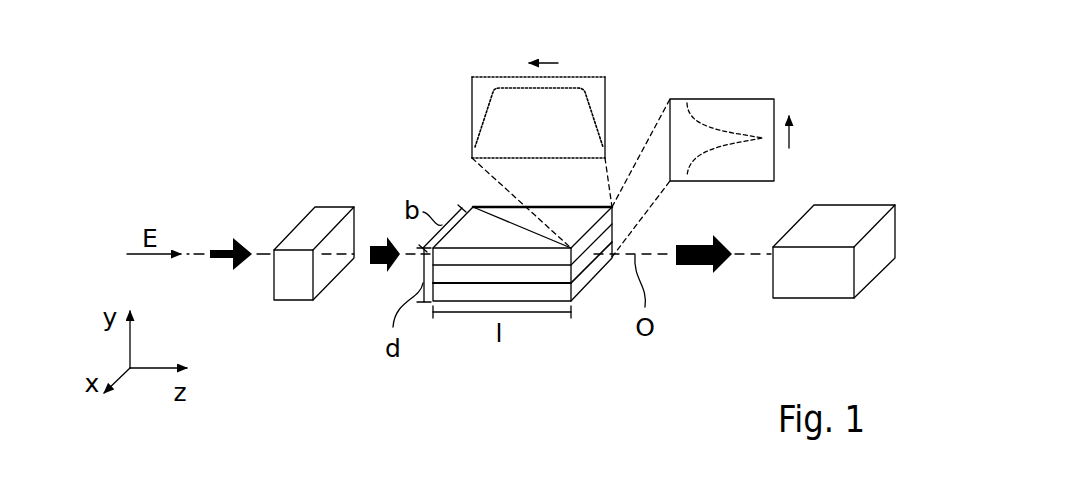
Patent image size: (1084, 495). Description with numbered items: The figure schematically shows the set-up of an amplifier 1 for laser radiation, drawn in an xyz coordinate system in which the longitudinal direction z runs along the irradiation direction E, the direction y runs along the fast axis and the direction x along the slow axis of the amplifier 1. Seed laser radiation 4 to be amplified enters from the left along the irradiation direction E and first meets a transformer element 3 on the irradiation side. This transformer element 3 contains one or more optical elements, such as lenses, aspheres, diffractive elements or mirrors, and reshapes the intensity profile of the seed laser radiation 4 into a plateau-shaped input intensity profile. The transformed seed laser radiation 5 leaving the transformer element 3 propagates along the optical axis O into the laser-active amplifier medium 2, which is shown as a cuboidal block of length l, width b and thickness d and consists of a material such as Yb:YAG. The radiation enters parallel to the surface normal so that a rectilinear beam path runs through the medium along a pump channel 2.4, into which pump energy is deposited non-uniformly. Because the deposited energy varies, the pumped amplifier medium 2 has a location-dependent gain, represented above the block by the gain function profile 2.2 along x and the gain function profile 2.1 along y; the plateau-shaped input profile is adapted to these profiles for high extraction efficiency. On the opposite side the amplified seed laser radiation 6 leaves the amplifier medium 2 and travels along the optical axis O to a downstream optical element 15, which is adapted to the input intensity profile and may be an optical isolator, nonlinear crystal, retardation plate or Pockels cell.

The amplifier 1 is at (240, 97).
The laser-active amplifier medium 2 is at (488, 232).
The gain function profile 2.1 is at (715, 127).
The gain function profile 2.2 is at (585, 88).
The pump channel 2.4 is at (582, 265).
The transformer element 3 is at (293, 287).
The seed laser radiation 4 is at (225, 250).
The transformed seed laser radiation 5 is at (377, 267).
The amplified seed laser radiation 6 is at (695, 265).
The optical element 15 is at (832, 277).